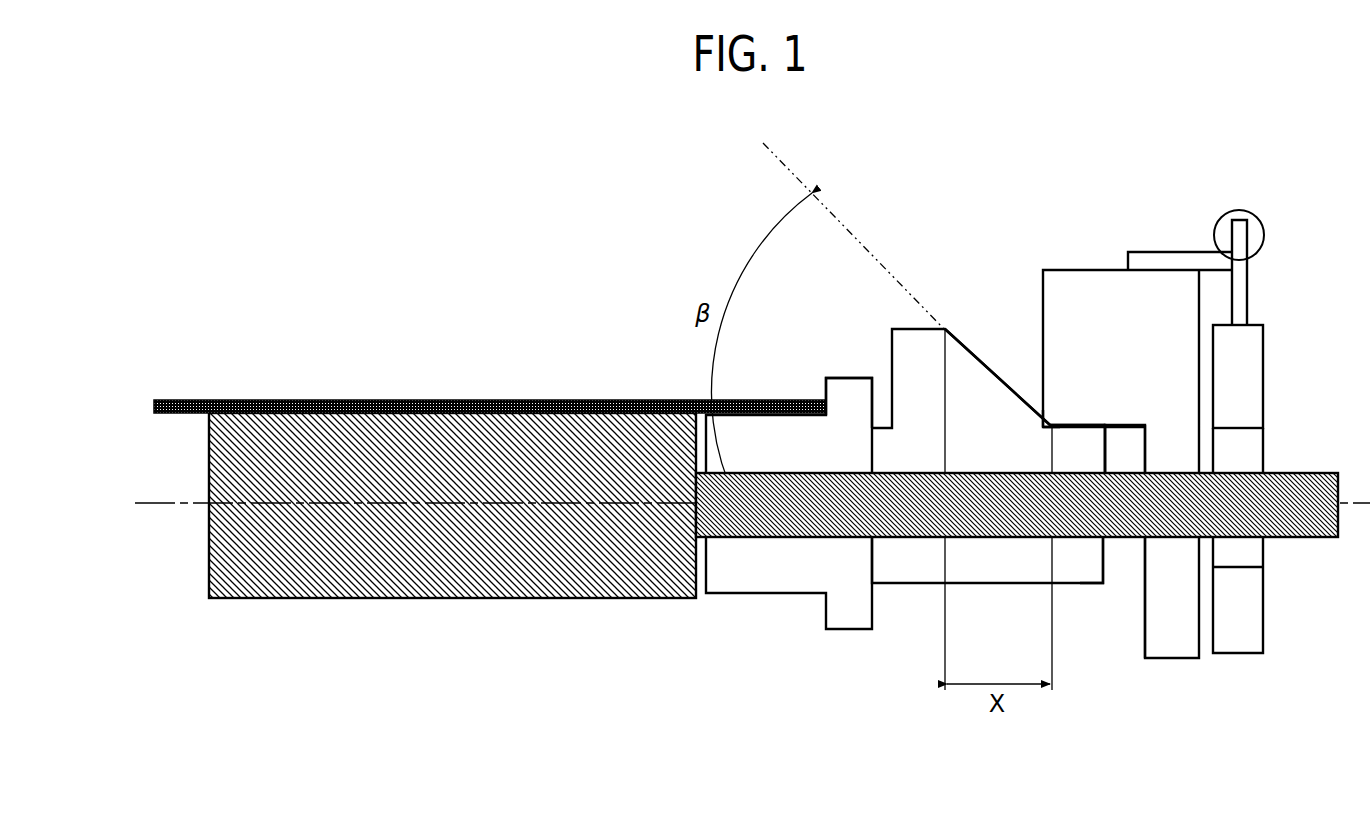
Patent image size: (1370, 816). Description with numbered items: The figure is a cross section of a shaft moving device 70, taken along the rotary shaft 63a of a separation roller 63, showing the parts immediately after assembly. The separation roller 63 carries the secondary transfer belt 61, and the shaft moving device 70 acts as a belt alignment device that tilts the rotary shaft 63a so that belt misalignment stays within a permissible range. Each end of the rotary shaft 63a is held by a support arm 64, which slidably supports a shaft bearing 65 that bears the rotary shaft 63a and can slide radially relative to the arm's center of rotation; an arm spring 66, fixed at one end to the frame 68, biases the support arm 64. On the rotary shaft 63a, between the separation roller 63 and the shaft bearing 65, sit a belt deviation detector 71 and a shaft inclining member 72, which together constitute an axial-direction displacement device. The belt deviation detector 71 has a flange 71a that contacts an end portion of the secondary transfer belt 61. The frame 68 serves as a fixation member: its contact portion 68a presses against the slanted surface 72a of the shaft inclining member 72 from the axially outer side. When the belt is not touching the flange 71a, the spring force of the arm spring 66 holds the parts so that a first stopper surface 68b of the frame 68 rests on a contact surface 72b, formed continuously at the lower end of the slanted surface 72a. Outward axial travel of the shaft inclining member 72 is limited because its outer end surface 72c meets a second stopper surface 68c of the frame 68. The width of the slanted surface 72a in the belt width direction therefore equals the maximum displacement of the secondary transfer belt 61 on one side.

The secondary transfer belt 61 is at (372, 398).
The separation roller 63 is at (312, 602).
The rotary shaft 63a is at (1313, 540).
The support arm 64 is at (1265, 357).
The shaft bearing 65 is at (1265, 445).
The arm spring 66 is at (1265, 233).
The frame 68 is at (1175, 658).
The contact portion 68a is at (1048, 420).
The first stopper surface 68b is at (1133, 428).
The second stopper surface 68c is at (1143, 637).
The shaft moving device 70 is at (1008, 208).
The belt deviation detector 71 is at (750, 595).
The flange 71a is at (838, 378).
The shaft inclining member 72 is at (902, 585).
The slanted surface 72a is at (965, 343).
The contact surface 72b is at (1078, 425).
The outer end surface 72c is at (1115, 572).